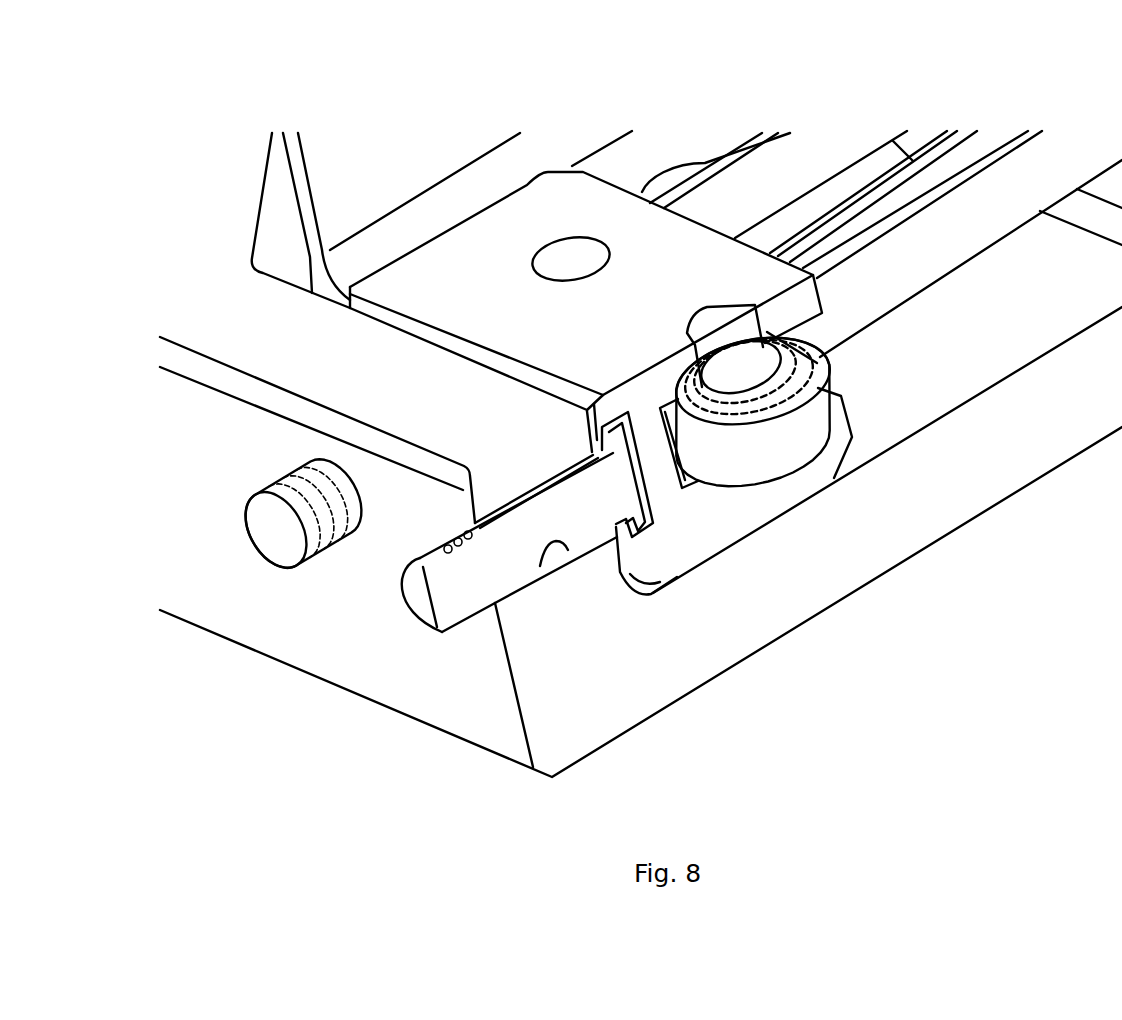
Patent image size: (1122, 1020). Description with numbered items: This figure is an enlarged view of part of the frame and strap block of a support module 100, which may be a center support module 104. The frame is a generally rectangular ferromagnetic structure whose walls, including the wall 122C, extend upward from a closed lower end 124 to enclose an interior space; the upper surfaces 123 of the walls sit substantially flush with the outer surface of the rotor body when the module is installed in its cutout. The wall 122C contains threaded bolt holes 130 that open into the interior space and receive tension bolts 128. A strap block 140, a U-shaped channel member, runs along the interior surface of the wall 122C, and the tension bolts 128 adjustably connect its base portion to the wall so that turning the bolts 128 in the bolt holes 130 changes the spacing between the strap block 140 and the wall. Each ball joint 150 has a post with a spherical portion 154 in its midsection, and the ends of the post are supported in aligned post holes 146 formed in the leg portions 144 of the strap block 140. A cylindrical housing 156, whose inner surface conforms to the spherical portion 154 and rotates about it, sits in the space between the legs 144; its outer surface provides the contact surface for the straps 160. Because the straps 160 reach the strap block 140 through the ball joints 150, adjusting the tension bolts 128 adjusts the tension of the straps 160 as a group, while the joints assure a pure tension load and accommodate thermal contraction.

The support module 100 is at (626, 407).
The center support module 104 is at (626, 407).
The wall 122C is at (385, 652).
The upper surface 123 is at (272, 352).
The lower end 124 is at (1080, 440).
The tension bolt 128 is at (275, 537).
The bolt hole 130 is at (568, 550).
The strap block 140 is at (595, 304).
The leg portion 144 is at (803, 303).
The post hole 146 is at (590, 255).
The ball joint 150 is at (826, 490).
The spherical portion 154 is at (783, 450).
The cylindrical housing 156 is at (773, 380).
The strap 160 is at (771, 176).